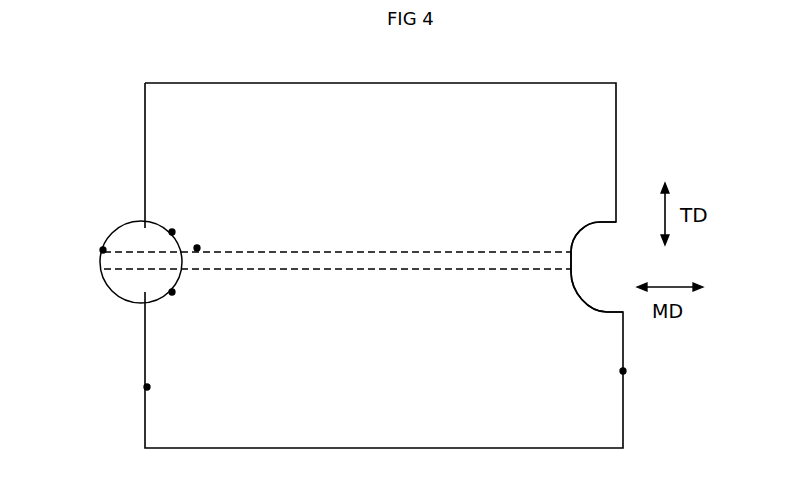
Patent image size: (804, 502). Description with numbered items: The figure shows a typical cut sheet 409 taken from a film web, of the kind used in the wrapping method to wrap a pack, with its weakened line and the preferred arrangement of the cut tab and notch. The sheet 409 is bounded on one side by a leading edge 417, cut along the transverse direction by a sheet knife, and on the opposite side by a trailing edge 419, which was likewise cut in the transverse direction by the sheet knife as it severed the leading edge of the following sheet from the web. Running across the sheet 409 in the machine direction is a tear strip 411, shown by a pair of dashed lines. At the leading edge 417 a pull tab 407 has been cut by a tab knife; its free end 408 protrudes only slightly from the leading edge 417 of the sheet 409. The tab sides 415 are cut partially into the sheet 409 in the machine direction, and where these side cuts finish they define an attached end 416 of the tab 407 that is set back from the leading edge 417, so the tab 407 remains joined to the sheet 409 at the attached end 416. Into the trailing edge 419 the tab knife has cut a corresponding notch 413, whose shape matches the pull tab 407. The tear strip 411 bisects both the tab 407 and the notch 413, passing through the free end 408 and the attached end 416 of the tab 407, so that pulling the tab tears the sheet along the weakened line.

The pull tab 407 is at (145, 227).
The edge point 408 is at (103, 250).
The sheet 409 is at (282, 176).
The tear strip 411 is at (429, 255).
The notch 413 is at (590, 254).
The tab sides 415 is at (172, 292).
The attached end of the tab 416 is at (197, 248).
The leading edge 417 is at (147, 387).
The trailing edge 419 is at (623, 371).